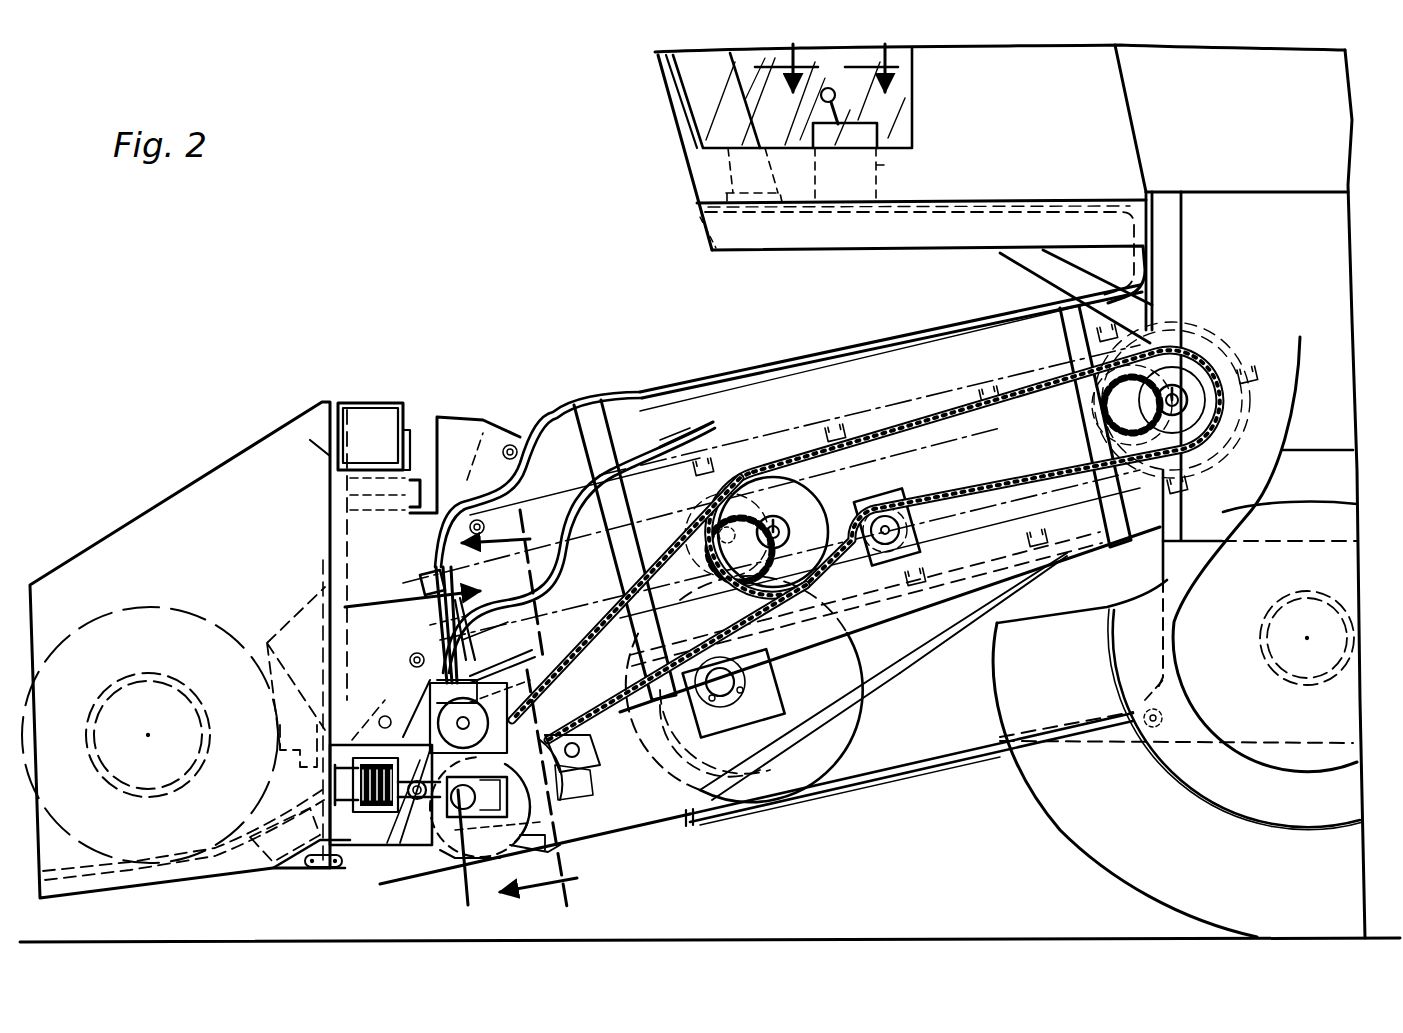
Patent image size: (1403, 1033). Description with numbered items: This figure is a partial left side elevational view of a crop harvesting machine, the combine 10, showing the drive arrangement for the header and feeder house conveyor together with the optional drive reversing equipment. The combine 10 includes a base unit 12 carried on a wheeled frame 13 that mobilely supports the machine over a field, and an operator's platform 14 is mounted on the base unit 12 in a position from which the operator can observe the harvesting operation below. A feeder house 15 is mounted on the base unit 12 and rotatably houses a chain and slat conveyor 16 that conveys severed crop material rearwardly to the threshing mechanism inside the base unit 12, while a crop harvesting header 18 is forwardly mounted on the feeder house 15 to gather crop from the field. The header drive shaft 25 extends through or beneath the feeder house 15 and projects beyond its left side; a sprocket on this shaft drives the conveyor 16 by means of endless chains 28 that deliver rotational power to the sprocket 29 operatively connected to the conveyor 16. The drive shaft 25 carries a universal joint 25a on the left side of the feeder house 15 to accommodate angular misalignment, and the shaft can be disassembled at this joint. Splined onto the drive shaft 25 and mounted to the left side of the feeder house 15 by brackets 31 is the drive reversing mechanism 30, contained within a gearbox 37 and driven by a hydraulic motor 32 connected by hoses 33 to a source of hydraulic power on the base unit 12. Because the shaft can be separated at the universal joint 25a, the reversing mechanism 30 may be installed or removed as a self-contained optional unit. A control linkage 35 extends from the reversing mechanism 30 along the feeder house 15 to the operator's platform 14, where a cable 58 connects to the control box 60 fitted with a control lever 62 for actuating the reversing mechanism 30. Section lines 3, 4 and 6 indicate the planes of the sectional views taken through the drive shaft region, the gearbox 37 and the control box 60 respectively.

The combine 10 is at (375, 240).
The base unit 12 is at (1163, 258).
The wheeled frame 13 is at (1093, 840).
The operator's platform 14 is at (765, 238).
The feeder house 15 is at (793, 392).
The chain and slat conveyor 16 is at (947, 406).
The crop harvesting header 18 is at (263, 440).
The header drive shaft 25 is at (400, 845).
The universal joint 25a is at (548, 852).
The endless chains 28 is at (762, 478).
The sprocket 29 is at (1125, 410).
The drive reversing mechanism 30 is at (640, 850).
The brackets 31 is at (478, 600).
The hydraulic motor 32 is at (532, 622).
The hoses 33 is at (556, 554).
The control linkage 35 is at (435, 567).
The gearbox 37 is at (440, 850).
The cable 58 is at (628, 398).
The control box 60 is at (880, 165).
The control lever 62 is at (840, 112).
The section line 3- 3 is at (527, 700).
The section line 4- 4 is at (412, 734).
The section line 6- 6 is at (829, 59).